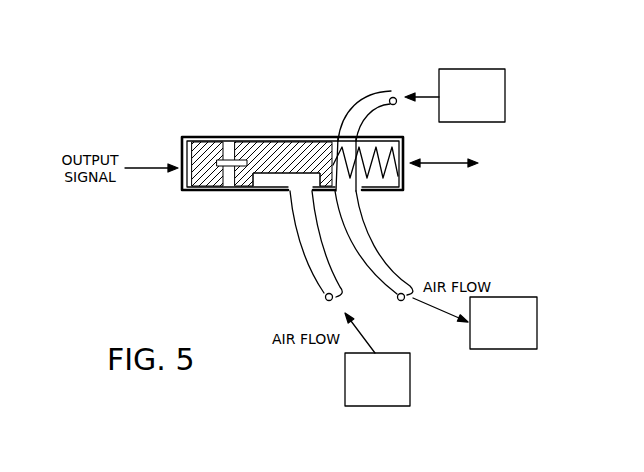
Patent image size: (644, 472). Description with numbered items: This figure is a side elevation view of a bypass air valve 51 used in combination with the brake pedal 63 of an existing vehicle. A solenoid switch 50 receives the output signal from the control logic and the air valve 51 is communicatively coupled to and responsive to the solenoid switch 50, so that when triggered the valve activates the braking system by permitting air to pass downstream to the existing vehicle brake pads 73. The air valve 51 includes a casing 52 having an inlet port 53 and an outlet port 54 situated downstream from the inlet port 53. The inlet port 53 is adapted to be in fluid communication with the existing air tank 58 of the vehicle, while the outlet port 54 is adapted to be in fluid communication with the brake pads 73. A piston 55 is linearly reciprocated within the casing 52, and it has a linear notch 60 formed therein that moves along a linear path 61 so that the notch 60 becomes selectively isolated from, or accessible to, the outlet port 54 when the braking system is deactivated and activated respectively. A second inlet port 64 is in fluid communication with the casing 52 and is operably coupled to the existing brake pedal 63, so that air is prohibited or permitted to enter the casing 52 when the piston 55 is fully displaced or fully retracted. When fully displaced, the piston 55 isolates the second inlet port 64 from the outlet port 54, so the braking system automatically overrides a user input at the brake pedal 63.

The solenoid switch 50 is at (208, 143).
The air valve 51 is at (309, 77).
The casing 52 is at (268, 143).
The inlet port 53 is at (300, 188).
The outlet port 54 is at (357, 200).
The piston 55 is at (297, 150).
The air tank 58 is at (402, 397).
The linear notch 60 is at (262, 182).
The linear path 61 is at (440, 165).
The brake pedal 63 is at (492, 73).
The second inlet port 64 is at (347, 142).
The brake pads 73 is at (523, 302).